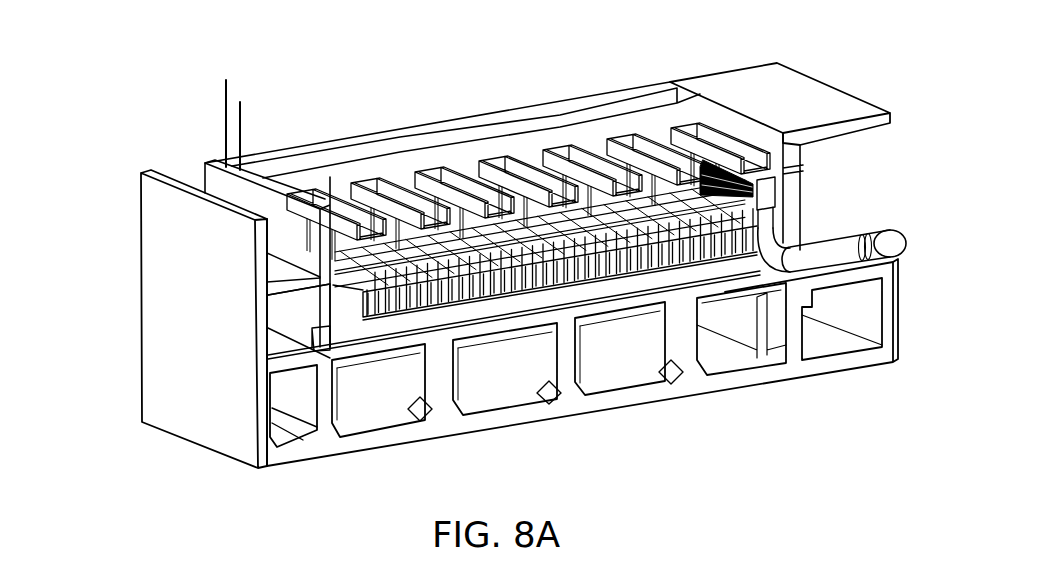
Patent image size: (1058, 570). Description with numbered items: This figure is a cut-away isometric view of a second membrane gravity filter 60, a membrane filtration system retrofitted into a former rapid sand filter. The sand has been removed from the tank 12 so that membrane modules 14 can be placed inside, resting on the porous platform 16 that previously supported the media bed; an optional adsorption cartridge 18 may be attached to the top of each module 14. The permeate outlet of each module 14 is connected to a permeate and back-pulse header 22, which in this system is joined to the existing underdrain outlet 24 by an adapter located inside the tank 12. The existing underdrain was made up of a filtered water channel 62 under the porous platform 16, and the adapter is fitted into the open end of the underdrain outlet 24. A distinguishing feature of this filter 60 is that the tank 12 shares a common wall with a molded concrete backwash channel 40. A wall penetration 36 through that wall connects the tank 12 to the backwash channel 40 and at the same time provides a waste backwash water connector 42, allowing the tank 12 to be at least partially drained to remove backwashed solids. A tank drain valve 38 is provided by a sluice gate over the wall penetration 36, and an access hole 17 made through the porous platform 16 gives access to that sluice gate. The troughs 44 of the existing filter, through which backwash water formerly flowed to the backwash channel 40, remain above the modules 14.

The tank 12 is at (820, 100).
The membrane modules 14 is at (806, 185).
The porous platform 16 is at (577, 273).
The access hole 17 is at (455, 318).
The adsorption cartridge 18 is at (768, 182).
The permeate and back-pulse header 22 is at (760, 218).
The underdrain outlet 24 is at (880, 228).
The wall penetration 36 is at (330, 353).
The waste backwash water connector 42 is at (330, 353).
The tank drain valve 38 is at (338, 333).
The backwash channel 40 is at (283, 350).
The troughs 44 is at (717, 130).
The second membrane gravity filter 60 is at (113, 415).
The filtered water channel 62 is at (633, 282).